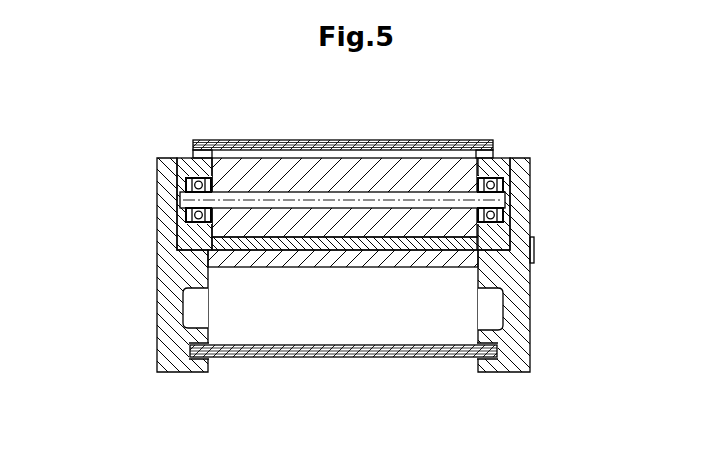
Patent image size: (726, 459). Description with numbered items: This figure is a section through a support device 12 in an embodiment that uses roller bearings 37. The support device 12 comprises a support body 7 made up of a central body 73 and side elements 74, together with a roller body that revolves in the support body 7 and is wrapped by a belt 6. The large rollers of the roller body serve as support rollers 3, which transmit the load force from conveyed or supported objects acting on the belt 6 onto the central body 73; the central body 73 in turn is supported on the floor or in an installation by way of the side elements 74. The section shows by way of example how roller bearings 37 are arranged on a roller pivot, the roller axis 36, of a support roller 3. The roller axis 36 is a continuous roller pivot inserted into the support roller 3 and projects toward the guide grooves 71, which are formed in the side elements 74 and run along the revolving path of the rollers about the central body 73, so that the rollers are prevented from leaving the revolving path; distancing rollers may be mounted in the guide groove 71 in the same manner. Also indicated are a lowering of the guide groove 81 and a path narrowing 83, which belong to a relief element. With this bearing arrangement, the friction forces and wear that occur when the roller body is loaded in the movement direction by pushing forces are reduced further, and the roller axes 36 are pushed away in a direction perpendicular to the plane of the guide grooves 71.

The support device 12 is at (386, 245).
The support roller 3 is at (214, 173).
The belt 6 is at (251, 140).
The support body 7 is at (625, 250).
The roller axis 36 is at (512, 197).
The roller bearing 37 is at (510, 182).
The guide groove 71 is at (482, 313).
The central body 73 is at (240, 260).
The side element 74 is at (521, 316).
The lowering of the guide groove 81 is at (162, 198).
The path narrowing 83 is at (474, 175).